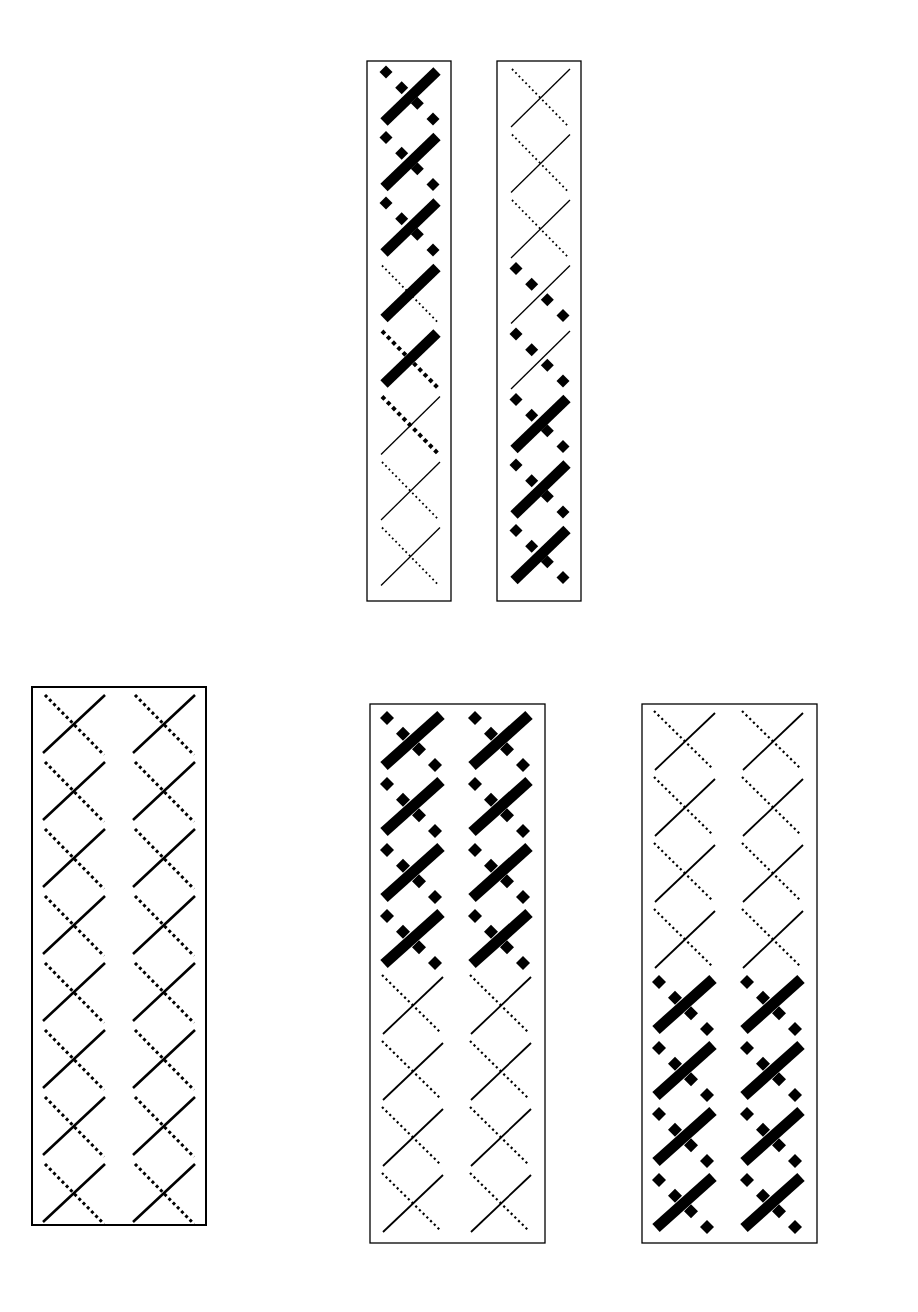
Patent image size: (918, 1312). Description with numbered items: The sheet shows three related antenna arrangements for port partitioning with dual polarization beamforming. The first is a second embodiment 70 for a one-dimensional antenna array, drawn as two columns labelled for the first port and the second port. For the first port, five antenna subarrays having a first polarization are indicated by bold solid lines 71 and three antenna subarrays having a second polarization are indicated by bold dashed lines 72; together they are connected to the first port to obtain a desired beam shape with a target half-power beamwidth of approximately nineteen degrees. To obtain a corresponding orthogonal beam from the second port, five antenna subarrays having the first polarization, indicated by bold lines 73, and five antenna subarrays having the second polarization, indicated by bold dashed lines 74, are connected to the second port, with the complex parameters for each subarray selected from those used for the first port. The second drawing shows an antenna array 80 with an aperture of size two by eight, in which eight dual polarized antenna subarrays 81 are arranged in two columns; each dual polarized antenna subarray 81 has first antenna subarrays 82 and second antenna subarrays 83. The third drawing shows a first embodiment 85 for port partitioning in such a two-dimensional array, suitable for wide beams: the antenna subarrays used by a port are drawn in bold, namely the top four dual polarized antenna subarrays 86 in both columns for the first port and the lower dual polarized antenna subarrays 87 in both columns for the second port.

In FIG. 7, the second embodiment 70 is at (200, 75).
In FIG. 7, the bold solid lines 71 is at (393, 180).
In FIG. 7, the bold dashed lines 72 is at (385, 72).
In FIG. 7, the bold lines 73 is at (565, 406).
In FIG. 7, the bold dashed lines 74 is at (563, 318).
In FIG. 8A, the antenna array 80 is at (199, 664).
In FIG. 8A, the dual polarized antenna subarrays 81 is at (200, 797).
In FIG. 8A, the first antenna subarrays 82 is at (192, 698).
In FIG. 8A, the second antenna subarrays 83 is at (190, 752).
In FIG. 8B, the first embodiment 85 is at (365, 672).
In FIG. 8B, the top four dual polarized antenna subarrays 86 is at (382, 935).
In FIG. 8B, the lower dual polarized antenna subarrays 87 is at (656, 1197).